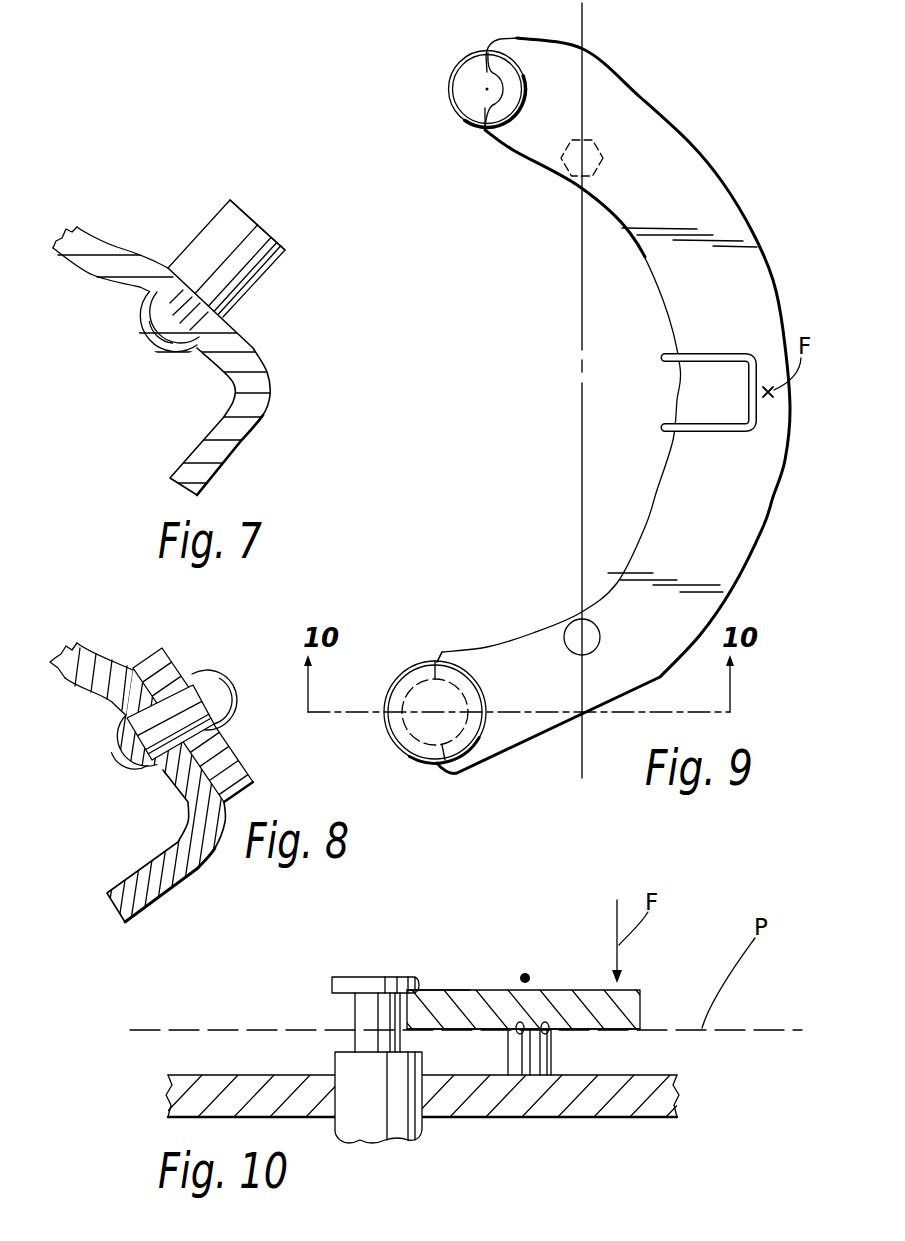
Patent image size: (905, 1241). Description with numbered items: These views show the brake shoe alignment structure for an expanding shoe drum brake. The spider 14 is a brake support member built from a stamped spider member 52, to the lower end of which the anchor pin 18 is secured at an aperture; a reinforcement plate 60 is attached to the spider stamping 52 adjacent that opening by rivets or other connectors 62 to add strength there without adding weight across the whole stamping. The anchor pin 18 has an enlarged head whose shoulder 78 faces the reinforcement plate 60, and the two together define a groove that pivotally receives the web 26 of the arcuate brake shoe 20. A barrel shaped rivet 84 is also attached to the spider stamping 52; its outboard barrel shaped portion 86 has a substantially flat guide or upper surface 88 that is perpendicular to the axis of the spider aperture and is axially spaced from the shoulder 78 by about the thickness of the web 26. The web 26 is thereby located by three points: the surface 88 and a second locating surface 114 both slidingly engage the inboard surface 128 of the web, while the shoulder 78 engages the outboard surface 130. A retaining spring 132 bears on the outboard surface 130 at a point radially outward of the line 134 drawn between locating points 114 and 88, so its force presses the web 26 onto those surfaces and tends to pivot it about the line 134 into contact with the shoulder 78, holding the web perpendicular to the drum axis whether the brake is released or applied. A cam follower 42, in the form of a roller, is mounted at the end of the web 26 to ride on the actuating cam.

In FIG. 10, the brake support member or spider 14 is at (661, 1118).
In FIG. 9, the anchor pin 18 is at (415, 661).
In FIG. 10, the anchor pin 18 is at (368, 967).
In FIG. 9, the brake shoe 20 is at (754, 232).
In FIG. 9, the web 26 is at (697, 182).
In FIG. 10, the web 26 is at (629, 1009).
In FIG. 9, the cam follower 42 is at (471, 68).
In FIG. 7, the spider stamping 52 is at (237, 353).
In FIG. 8, the spider stamping 52 is at (78, 663).
In FIG. 8, the reinforcement plate 60 is at (228, 770).
In FIG. 8, the rivets or other connectors 62 is at (207, 675).
In FIG. 10, the shoulder 78 is at (417, 990).
In FIG. 7, the barrel shaped rivet 84 is at (198, 224).
In FIG. 7, the outboard barrel shaped portion 86 is at (273, 268).
In FIG. 7, the guide or upper surface 88 is at (270, 234).
In FIG. 9, the guide or upper surface 88 is at (573, 622).
In FIG. 10, the guide or upper surface 88 is at (523, 1077).
In FIG. 9, the locating surface 114 is at (559, 178).
In FIG. 10, the locating surface 114 is at (552, 1077).
In FIG. 10, the inboard surface of the web 128 is at (595, 1030).
In FIG. 10, the outboard surface of the web 130 is at (457, 990).
In FIG. 9, the retaining spring 132 is at (750, 433).
In FIG. 9, the line 134 is at (584, 42).
In FIG. 10, the line 134 is at (529, 974).